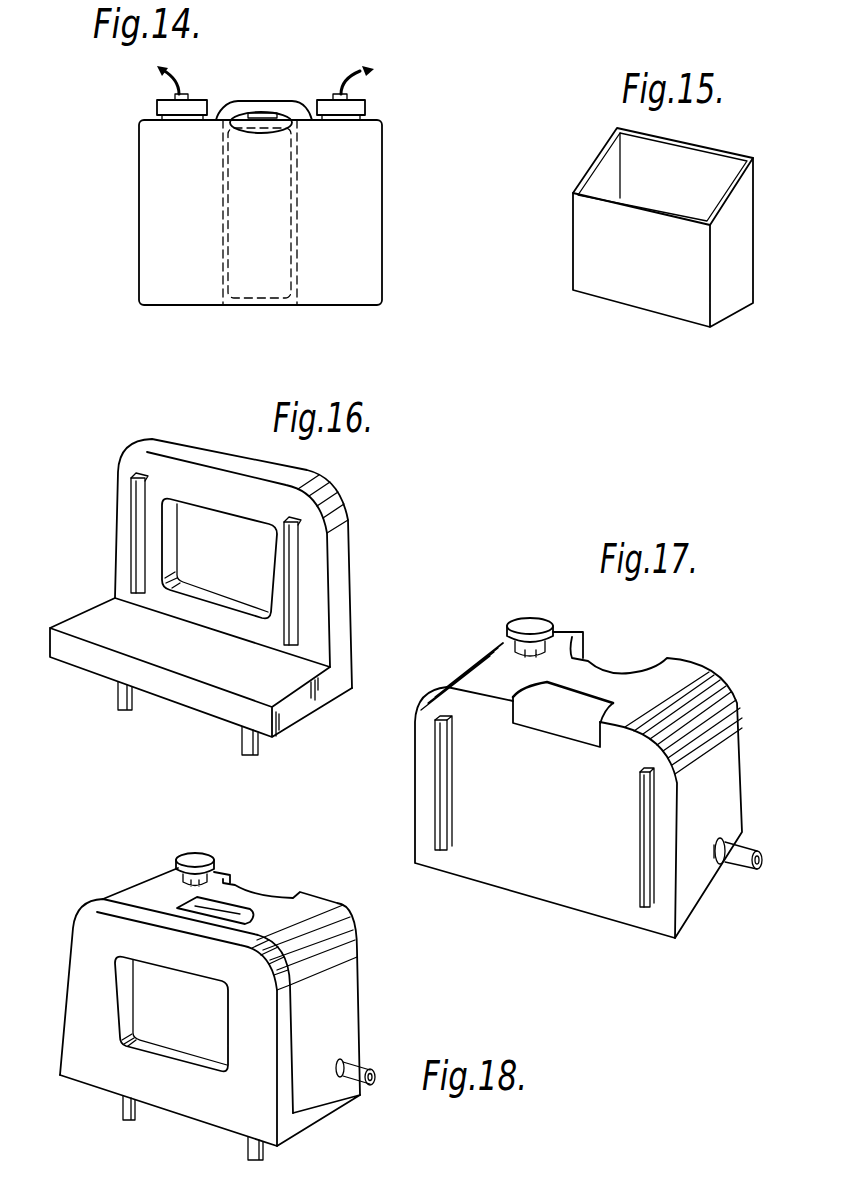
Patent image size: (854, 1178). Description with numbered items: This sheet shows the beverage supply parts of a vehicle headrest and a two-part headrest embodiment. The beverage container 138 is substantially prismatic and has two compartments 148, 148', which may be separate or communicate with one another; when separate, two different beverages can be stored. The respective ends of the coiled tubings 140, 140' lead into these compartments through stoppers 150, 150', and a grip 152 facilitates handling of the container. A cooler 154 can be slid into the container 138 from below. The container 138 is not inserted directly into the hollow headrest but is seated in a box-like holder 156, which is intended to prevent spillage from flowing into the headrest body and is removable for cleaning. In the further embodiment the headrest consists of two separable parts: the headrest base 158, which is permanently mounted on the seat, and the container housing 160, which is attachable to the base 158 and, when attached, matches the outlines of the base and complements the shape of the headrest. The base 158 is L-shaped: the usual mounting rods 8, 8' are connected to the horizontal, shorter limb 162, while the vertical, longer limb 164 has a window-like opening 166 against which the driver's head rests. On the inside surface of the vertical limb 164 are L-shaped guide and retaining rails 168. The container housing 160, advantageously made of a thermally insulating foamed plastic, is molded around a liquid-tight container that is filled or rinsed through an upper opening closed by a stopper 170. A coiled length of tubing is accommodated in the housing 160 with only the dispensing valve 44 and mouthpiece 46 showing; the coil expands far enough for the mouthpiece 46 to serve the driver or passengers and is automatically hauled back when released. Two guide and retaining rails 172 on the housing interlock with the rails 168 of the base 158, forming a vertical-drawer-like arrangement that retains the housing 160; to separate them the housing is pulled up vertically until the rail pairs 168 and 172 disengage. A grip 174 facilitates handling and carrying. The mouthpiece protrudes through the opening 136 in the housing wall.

In FIG. 14, the beverage container 138 is at (394, 212).
In FIG. 14, the coiled tubing 140 is at (137, 80).
In FIG. 14, the coiled tubing 140' is at (386, 80).
In FIG. 14, the compartment 148 is at (194, 212).
In FIG. 14, the compartment 148' is at (329, 212).
In FIG. 14, the stopper 150 is at (146, 111).
In FIG. 14, the stopper 150' is at (383, 112).
In FIG. 14, the grip 152 is at (279, 104).
In FIG. 14, the cooler 154 is at (243, 125).
In FIG. 15, the holder 156 is at (730, 294).
In FIG. 16, the headrest base 158 is at (358, 584).
In FIG. 18, the headrest base 158 is at (50, 1054).
In FIG. 17, the container housing 160 is at (752, 772).
In FIG. 16, the horizontal limb 162 is at (102, 616).
In FIG. 18, the horizontal limb 162 is at (332, 1107).
In FIG. 16, the vertical limb 164 is at (342, 545).
In FIG. 18, the vertical limb 164 is at (280, 1075).
In FIG. 16, the window-like opening 166 is at (240, 567).
In FIG. 18, the window-like opening 166 is at (163, 1047).
In FIG. 16, the guide and retaining rails 168 is at (135, 590).
In FIG. 18, the guide and retaining rails 168 is at (376, 984).
In FIG. 17, the stopper 170 is at (538, 623).
In FIG. 18, the stopper 170 is at (190, 856).
In FIG. 17, the guide and retaining rails 172 is at (438, 807).
In FIG. 17, the grip 174 is at (603, 672).
In FIG. 18, the grip 174 is at (260, 900).
In FIG. 17, the dispensing valve 44 is at (722, 860).
In FIG. 17, the mouthpiece 46 is at (748, 851).
In FIG. 18, the mouthpiece 46 is at (362, 1070).
In FIG. 17, the seal 136 is at (716, 860).
In FIG. 16, the mounting rod 8 is at (110, 706).
In FIG. 18, the mounting rod 8 is at (237, 1154).
In FIG. 16, the mounting rod 8' is at (231, 749).
In FIG. 18, the mounting rod 8' is at (111, 1123).